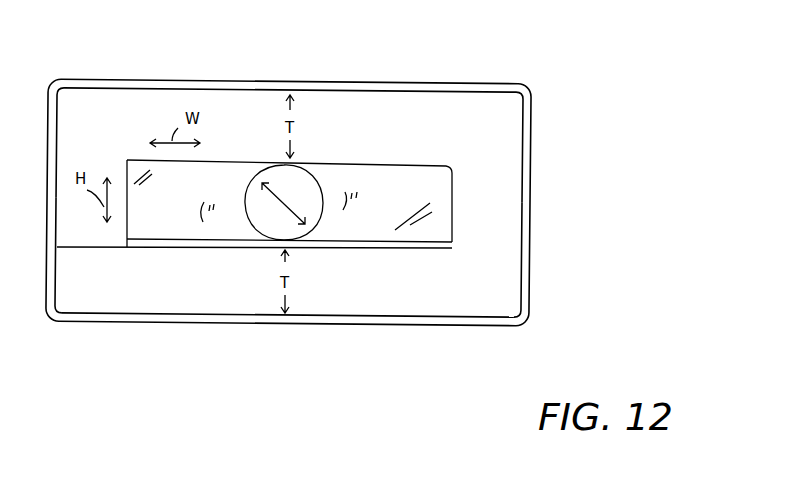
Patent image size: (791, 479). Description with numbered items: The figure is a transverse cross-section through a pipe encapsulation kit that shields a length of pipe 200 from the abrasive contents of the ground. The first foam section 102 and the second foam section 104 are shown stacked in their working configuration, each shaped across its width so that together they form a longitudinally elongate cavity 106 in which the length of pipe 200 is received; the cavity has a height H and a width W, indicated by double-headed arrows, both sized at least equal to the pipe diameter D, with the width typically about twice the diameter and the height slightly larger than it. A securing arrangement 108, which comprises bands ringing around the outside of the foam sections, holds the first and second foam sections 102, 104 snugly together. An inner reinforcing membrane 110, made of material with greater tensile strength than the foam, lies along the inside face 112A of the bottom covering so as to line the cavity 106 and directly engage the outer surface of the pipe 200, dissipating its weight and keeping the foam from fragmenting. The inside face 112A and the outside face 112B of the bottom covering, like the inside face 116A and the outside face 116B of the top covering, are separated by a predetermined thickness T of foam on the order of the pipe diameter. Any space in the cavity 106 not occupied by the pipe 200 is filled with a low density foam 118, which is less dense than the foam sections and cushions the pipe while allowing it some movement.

The first foam section 102 is at (397, 308).
The second foam section 104 is at (430, 112).
The cavity 106 is at (445, 197).
The securing arrangement 108 is at (533, 128).
The inner reinforcing membrane 110 is at (433, 244).
The inside face of the bottom covering 112A is at (162, 244).
The outside face of the bottom covering 112B is at (175, 322).
The inside face of the top covering 116A is at (378, 170).
The outside face of the top covering 116B is at (128, 86).
The low density foam 118 is at (357, 225).
The length of pipe 200 is at (325, 178).